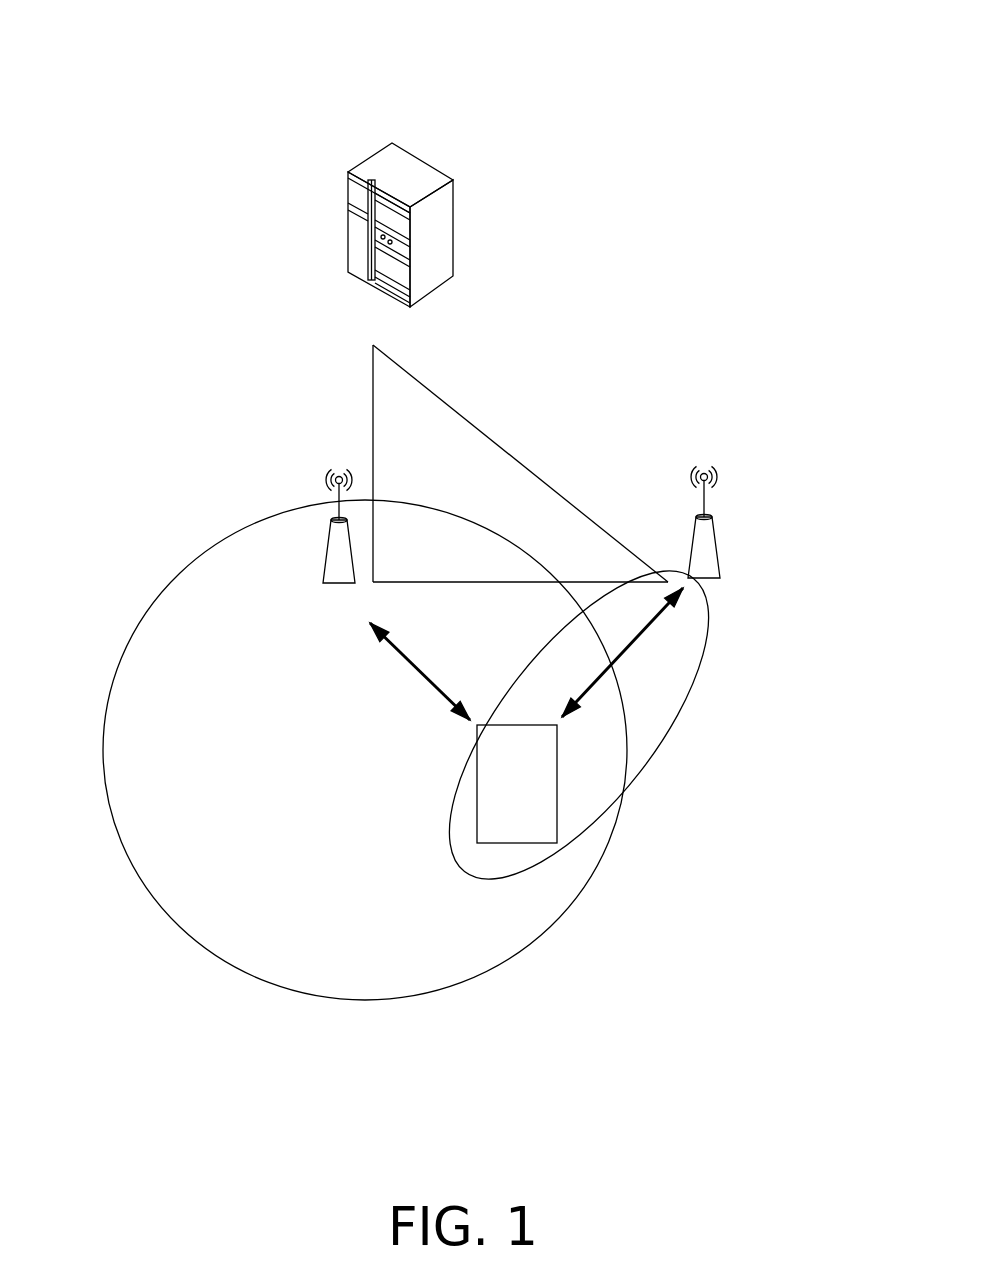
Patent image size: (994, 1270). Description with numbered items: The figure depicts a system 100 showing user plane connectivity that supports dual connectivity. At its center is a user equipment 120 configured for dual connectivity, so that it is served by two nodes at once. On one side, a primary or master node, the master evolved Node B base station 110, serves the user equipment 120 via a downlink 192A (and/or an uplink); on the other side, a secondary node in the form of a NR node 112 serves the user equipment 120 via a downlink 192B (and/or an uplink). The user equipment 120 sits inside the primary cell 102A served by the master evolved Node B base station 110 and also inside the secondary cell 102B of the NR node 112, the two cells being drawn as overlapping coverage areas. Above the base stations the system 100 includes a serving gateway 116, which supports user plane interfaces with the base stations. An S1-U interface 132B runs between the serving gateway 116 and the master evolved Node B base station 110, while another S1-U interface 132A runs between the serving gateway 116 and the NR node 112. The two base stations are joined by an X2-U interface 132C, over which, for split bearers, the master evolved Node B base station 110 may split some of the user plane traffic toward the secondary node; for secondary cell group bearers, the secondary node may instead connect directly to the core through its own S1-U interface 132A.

The system 100 is at (450, 43).
The serving gateway 116 is at (368, 247).
The S1-U interface 132A is at (460, 415).
The S1-U interface 132B is at (373, 392).
The X2-U interface 132C is at (410, 584).
The primary cell 102A is at (103, 750).
The secondary cell 102B is at (670, 740).
The master evolved Node B base station 110 is at (327, 550).
The NR node 112 is at (716, 550).
The user equipment 120 is at (498, 808).
The downlink 192A is at (400, 652).
The downlink 192B is at (634, 644).